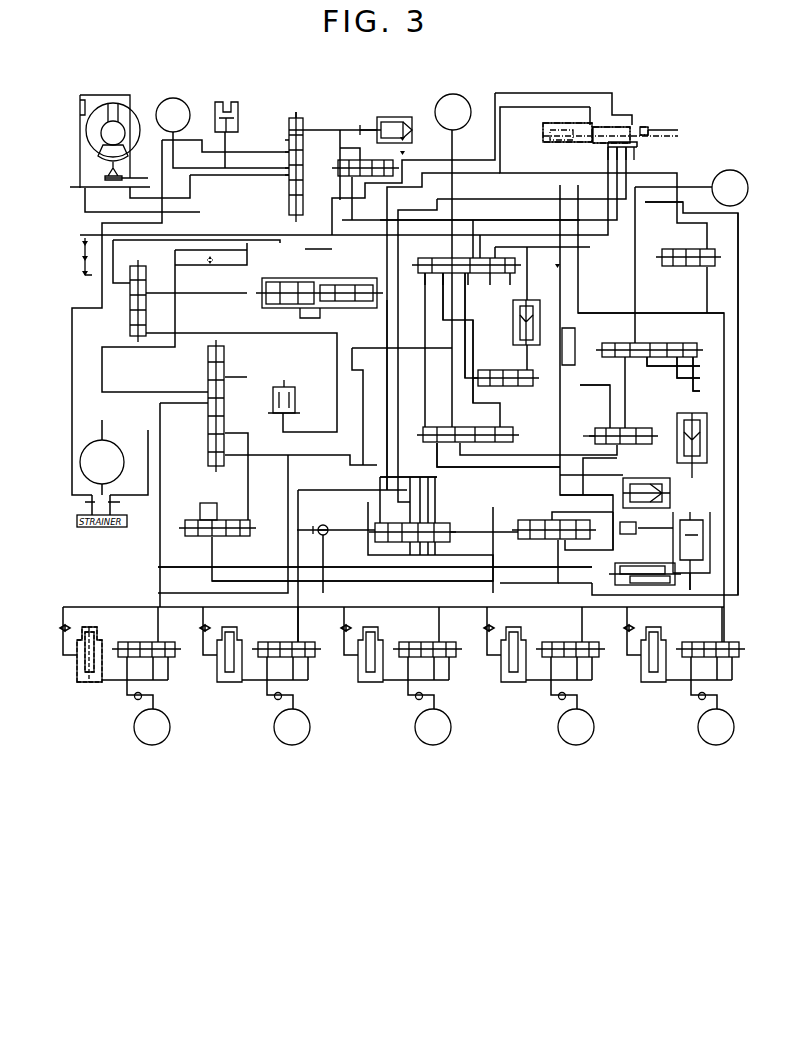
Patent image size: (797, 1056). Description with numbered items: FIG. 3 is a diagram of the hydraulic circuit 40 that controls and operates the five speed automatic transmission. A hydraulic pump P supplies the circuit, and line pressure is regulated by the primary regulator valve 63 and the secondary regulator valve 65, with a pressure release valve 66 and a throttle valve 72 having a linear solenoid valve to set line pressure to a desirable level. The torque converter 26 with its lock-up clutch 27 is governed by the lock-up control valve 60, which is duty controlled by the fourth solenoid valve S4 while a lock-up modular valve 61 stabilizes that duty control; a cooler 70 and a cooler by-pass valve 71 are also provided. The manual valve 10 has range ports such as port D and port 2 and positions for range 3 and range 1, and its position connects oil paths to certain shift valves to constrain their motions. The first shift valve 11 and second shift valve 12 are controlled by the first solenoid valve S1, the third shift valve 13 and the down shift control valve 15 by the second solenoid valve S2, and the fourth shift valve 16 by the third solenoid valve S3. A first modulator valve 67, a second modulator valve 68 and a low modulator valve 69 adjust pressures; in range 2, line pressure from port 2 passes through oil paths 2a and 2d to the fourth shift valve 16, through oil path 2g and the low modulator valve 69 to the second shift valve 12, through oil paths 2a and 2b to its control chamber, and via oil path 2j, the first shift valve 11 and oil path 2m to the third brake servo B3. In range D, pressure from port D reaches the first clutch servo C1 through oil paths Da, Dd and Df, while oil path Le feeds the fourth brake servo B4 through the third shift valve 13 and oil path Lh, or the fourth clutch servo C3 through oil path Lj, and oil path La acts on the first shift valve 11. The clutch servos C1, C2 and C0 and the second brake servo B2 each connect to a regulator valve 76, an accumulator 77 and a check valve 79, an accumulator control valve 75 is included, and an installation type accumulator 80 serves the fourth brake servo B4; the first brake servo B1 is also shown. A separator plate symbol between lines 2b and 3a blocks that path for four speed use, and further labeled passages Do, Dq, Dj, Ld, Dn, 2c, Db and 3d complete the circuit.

The hydraulic circuit 40 is at (73, 82).
The torque converter 26 is at (121, 102).
The lock-up clutch 27 is at (80, 110).
The cooler 70 is at (175, 97).
The cooler by-pass valve 71 is at (233, 102).
The lock-up control valve 60 is at (292, 126).
The fourth solenoid valve S4 is at (394, 115).
The lock-up modular valve 61 is at (395, 165).
The third brake hydraulic servo B3 is at (453, 112).
The manual valve 10 is at (652, 121).
The port D of the manual valve D is at (602, 152).
The range 3 position of the manual valve 3 is at (610, 150).
The range 1 position of the manual valve 1 is at (630, 150).
The port 2 of the manual valve 2 is at (630, 155).
The oil passage Do is at (662, 187).
The first brake hydraulic servo B1 is at (730, 188).
The oil path 2m is at (452, 220).
The oil passage Dq is at (510, 218).
The first shift valve 11 is at (515, 262).
The first modulator valve 67 is at (707, 250).
The secondary regulator valve 65 is at (138, 265).
The throttle valve 72 is at (358, 278).
The oil path 2j is at (451, 296).
The oil passage Dj is at (468, 296).
The oil passage Ld is at (425, 333).
The first solenoid valve S1 is at (532, 345).
The oil path Da is at (585, 312).
The oil path Df is at (706, 313).
The fourth shift valve 16 is at (681, 347).
The oil path 2a is at (595, 380).
The oil path 2d is at (700, 366).
The oil path Dd is at (700, 378).
The oil passage Dn is at (700, 391).
The primary regulator valve 63 is at (206, 380).
The pressure release valve 66 is at (295, 386).
The line 3a is at (387, 417).
The second shift valve 12 is at (436, 425).
The second modulator valve 68 is at (513, 388).
The oil path 2g is at (606, 432).
The low modulator valve 69 is at (645, 430).
The third solenoid valve S3 is at (692, 465).
The second solenoid valve S2 is at (650, 477).
The oil path 2b is at (435, 470).
The oil passage 2c is at (445, 490).
The down shift control valve 15 is at (448, 527).
The third shift valve 13 is at (533, 521).
The oil path Lh is at (582, 496).
The oil passage Db is at (612, 540).
The oil path Lj is at (565, 585).
The oil path La is at (341, 566).
The oil passage 3d is at (460, 570).
The fourth brake hydraulic servo B4 is at (716, 520).
The oil path Le is at (738, 548).
The accumulator 80 is at (660, 586).
The hydraulic pump P is at (90, 456).
The accumulator control valve 75 is at (200, 511).
The accumulator 77 is at (651, 684).
The regulator valve 76 is at (724, 643).
The check valve 79 is at (700, 700).
The second brake hydraulic servo B2 is at (152, 727).
The third clutch hydraulic servo C0 is at (292, 727).
The second clutch hydraulic servo C2 is at (433, 727).
The fourth clutch hydraulic servo C3 is at (576, 727).
The first clutch hydraulic servo C1 is at (716, 727).